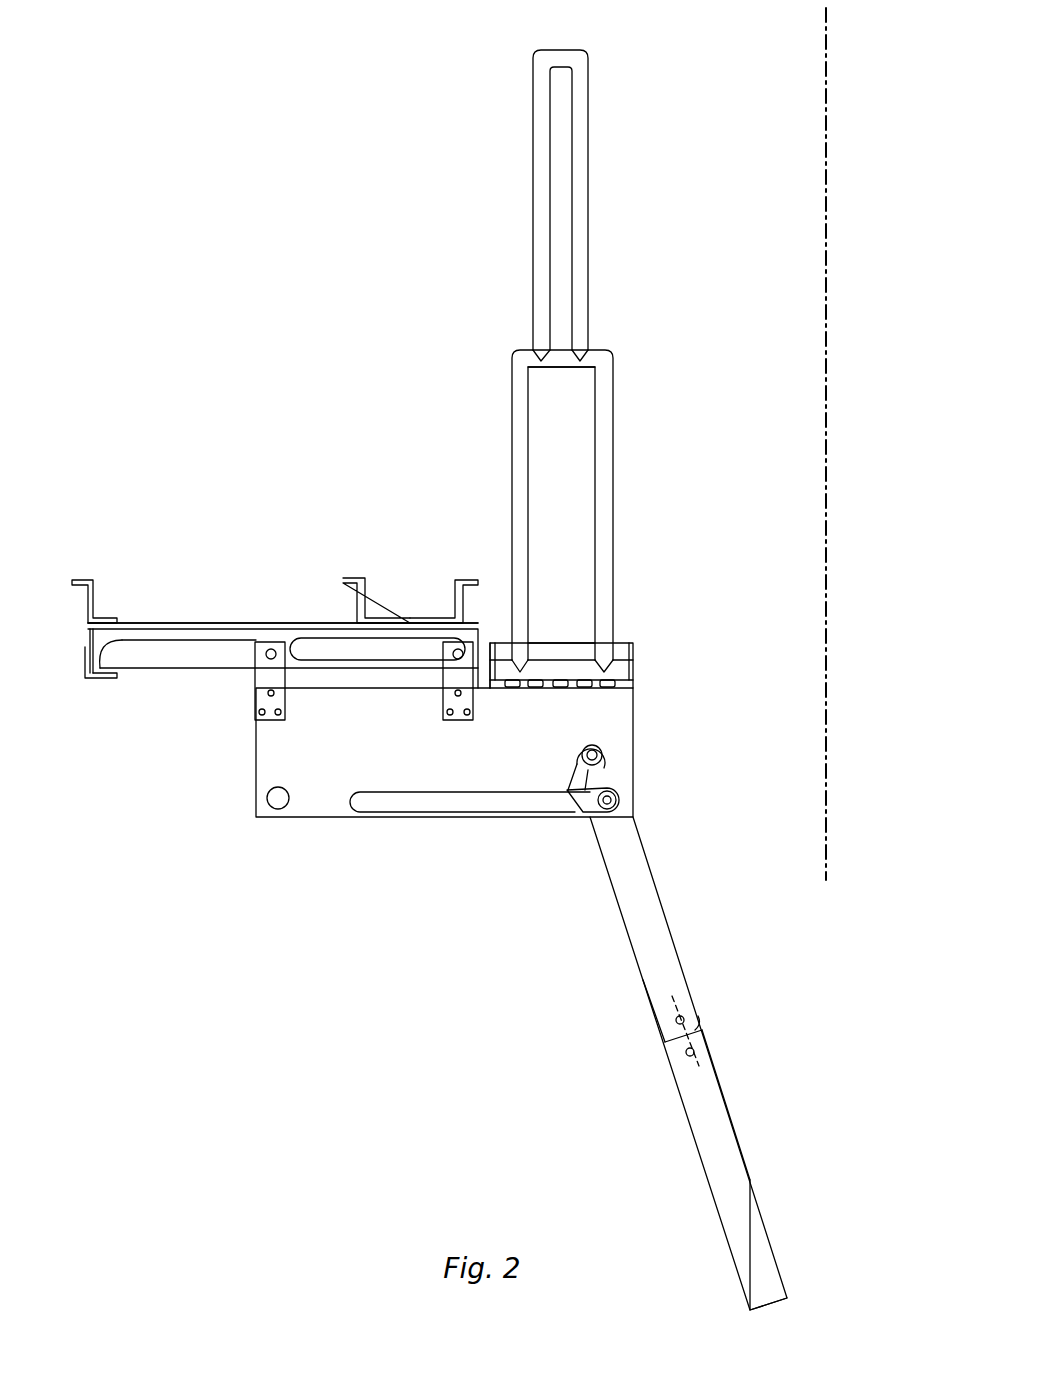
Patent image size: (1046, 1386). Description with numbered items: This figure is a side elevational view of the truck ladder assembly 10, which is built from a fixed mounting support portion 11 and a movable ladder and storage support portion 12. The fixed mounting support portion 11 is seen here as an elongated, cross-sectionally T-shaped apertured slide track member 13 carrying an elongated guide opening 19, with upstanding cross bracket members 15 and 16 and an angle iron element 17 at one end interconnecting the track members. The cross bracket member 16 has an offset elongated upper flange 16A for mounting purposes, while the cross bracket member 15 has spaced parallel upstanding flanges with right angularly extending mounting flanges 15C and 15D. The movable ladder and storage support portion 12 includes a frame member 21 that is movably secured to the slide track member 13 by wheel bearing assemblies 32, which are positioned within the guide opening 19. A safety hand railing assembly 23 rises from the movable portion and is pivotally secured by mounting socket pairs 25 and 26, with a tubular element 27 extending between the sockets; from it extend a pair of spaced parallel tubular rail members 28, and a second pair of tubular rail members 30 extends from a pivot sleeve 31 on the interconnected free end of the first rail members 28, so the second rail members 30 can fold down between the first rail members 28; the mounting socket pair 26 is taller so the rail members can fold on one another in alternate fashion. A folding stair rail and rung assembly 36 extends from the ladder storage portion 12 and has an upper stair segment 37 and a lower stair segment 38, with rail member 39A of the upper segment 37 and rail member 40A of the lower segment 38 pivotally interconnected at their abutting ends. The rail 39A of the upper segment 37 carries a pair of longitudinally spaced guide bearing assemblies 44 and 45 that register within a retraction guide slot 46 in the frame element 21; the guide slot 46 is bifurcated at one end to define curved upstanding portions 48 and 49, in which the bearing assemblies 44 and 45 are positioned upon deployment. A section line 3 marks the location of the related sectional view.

The section line 3- 3 is at (826, 880).
The truck ladder assembly 10 is at (278, 455).
The fixed mounting support portion 11 is at (253, 580).
The movable ladder and storage support portion 12 is at (222, 813).
The slide track member 13 is at (97, 638).
The cross bracket member 15 is at (413, 618).
The mounting flange 15C is at (352, 578).
The mounting flange 15D is at (470, 580).
The cross bracket member 16 is at (95, 592).
The upper flange 16A is at (75, 578).
The angle iron element 17 is at (85, 670).
The guide opening 19 is at (158, 657).
The frame member 21 is at (314, 798).
The safety hand railing assembly 23 is at (630, 408).
The mounting socket pair 25 is at (633, 672).
The mounting socket pair 26 is at (632, 650).
The tubular element 27 is at (562, 655).
The tubular rail member 28 is at (608, 523).
The second tubular rail member 30 is at (583, 203).
The pivot sleeve 31 is at (562, 360).
The wheel bearing assembly 32 is at (238, 711).
The folding stair rail and rung assembly 36 is at (722, 972).
The upper stair segment 37 is at (625, 985).
The stair segment 38 is at (772, 1188).
The rail member 39A is at (640, 912).
The rail member 40A is at (730, 1177).
The guide bearing assembly 44 is at (602, 753).
The guide bearing assembly 45 is at (618, 798).
The retraction guide slot 46 is at (460, 797).
The curved upstanding portion 48 is at (378, 820).
The curved upstanding portion 49 is at (560, 807).